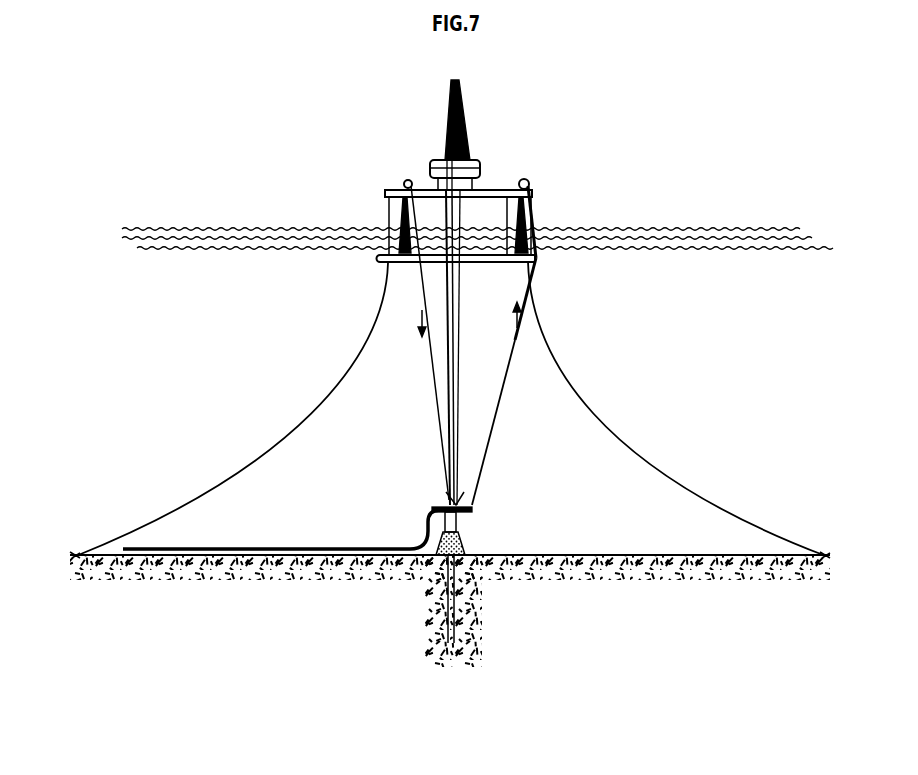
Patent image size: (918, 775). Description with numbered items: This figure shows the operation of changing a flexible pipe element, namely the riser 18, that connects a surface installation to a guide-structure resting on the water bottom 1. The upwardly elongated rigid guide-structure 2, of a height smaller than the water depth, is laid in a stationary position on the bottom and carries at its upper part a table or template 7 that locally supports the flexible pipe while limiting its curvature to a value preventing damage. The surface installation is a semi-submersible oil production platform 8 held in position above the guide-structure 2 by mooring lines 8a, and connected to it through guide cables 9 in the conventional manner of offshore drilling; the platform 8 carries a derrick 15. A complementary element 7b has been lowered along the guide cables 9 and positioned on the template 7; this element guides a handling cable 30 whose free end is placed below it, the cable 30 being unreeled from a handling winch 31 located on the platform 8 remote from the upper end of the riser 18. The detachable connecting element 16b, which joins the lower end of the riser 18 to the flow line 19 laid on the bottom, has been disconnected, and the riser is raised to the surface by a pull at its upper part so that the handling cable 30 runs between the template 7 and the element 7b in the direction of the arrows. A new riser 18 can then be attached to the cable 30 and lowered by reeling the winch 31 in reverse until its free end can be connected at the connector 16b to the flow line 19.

The sea bed 1 is at (658, 553).
The rigid guide-structure 2 is at (457, 528).
The template 7 is at (472, 512).
The complementary element 7b is at (455, 495).
The oil production platform 8 is at (387, 212).
The mooring lines 8a is at (619, 412).
The guide cables 9 is at (462, 320).
The derrick 15 is at (465, 118).
The detachable connecting element 16b is at (514, 337).
The riser 18 is at (538, 284).
The flow line 19 is at (278, 546).
The handling cable 30 is at (498, 425).
The handling winch 31 is at (407, 181).